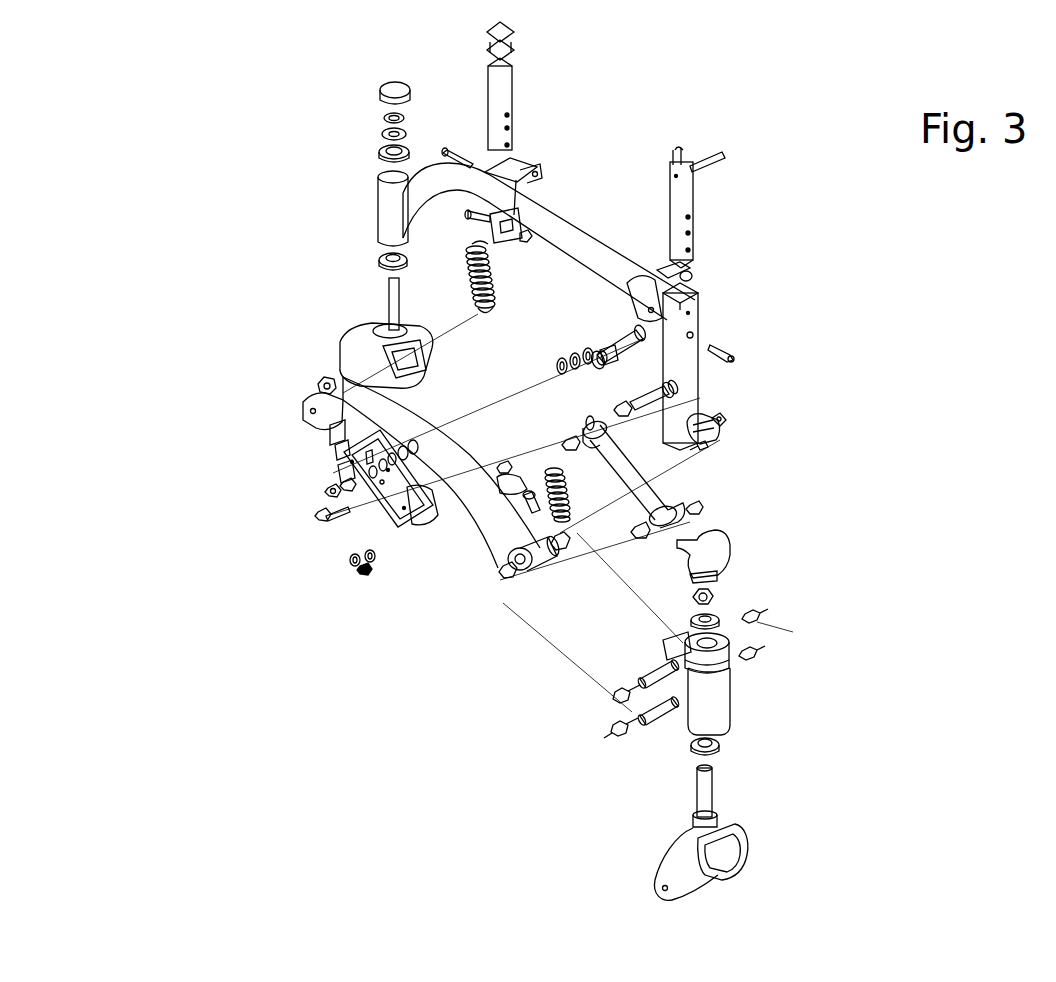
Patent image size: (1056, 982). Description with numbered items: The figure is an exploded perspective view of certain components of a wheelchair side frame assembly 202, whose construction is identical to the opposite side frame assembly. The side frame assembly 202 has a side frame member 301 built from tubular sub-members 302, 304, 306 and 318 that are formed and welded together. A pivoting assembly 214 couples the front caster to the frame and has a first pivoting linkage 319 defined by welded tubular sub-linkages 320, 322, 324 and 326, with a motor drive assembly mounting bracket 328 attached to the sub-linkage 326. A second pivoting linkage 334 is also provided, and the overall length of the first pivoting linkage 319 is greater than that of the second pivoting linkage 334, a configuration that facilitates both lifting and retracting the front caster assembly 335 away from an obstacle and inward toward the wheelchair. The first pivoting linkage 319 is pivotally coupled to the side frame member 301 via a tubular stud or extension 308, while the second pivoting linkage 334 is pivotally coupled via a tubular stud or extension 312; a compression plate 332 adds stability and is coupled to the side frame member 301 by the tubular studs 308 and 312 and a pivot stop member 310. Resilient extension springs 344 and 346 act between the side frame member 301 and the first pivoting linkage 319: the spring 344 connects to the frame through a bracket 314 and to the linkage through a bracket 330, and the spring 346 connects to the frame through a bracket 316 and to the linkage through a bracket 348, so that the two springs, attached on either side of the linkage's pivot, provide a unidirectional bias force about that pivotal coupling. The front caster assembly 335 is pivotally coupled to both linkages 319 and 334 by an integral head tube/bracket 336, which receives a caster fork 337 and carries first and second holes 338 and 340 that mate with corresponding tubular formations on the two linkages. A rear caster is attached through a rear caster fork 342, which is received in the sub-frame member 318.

The side frame assembly 202 is at (144, 749).
The pivoting assembly 214 is at (264, 681).
The side frame member 301 is at (629, 240).
The sub-member 302 is at (555, 227).
The sub-member 304 is at (703, 293).
The sub-member 306 is at (633, 307).
The tubular stud or extension 308 is at (697, 340).
The pivot stop member 310 is at (635, 342).
The tubular stud or extension 312 is at (660, 400).
The bracket 314 is at (707, 443).
The bracket 316 is at (517, 170).
The sub-member 318 is at (390, 208).
The first pivoting linkage 319 is at (333, 430).
The sub-linkage 320 is at (485, 510).
The sub-linkage 322 is at (435, 520).
The sub-linkage 324 is at (330, 400).
The sub-linkage 326 is at (340, 447).
The motor drive assembly mounting bracket 328 is at (340, 470).
The bracket 330 is at (500, 537).
The compression plate 332 is at (357, 513).
The second pivoting linkage 334 is at (647, 490).
The front caster assembly 335 is at (826, 631).
The head tube/bracket 336 is at (713, 693).
The caster fork 337 is at (715, 862).
The first hole 338 is at (677, 657).
The second hole 340 is at (683, 670).
The rear caster fork 342 is at (360, 350).
The extension spring 344 is at (570, 517).
The extension spring 346 is at (463, 267).
The bracket 348 is at (323, 385).